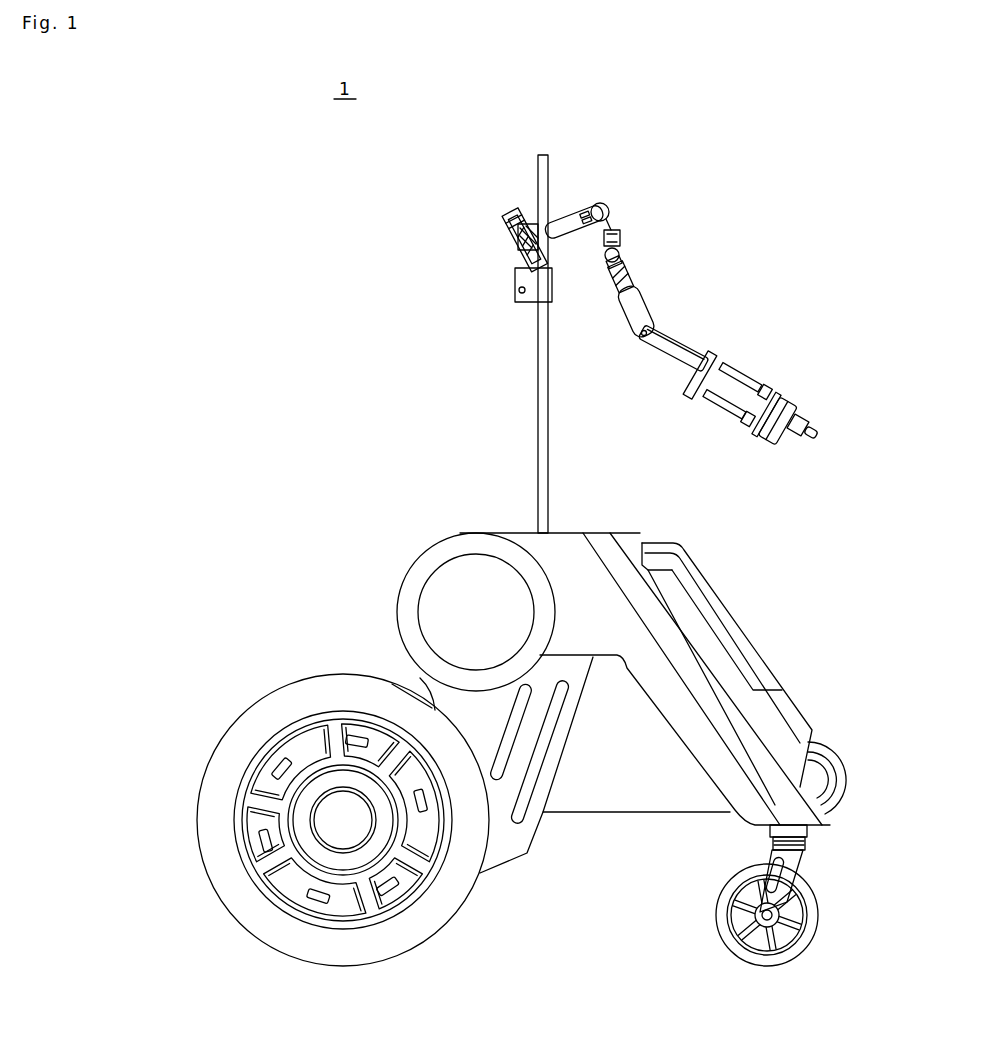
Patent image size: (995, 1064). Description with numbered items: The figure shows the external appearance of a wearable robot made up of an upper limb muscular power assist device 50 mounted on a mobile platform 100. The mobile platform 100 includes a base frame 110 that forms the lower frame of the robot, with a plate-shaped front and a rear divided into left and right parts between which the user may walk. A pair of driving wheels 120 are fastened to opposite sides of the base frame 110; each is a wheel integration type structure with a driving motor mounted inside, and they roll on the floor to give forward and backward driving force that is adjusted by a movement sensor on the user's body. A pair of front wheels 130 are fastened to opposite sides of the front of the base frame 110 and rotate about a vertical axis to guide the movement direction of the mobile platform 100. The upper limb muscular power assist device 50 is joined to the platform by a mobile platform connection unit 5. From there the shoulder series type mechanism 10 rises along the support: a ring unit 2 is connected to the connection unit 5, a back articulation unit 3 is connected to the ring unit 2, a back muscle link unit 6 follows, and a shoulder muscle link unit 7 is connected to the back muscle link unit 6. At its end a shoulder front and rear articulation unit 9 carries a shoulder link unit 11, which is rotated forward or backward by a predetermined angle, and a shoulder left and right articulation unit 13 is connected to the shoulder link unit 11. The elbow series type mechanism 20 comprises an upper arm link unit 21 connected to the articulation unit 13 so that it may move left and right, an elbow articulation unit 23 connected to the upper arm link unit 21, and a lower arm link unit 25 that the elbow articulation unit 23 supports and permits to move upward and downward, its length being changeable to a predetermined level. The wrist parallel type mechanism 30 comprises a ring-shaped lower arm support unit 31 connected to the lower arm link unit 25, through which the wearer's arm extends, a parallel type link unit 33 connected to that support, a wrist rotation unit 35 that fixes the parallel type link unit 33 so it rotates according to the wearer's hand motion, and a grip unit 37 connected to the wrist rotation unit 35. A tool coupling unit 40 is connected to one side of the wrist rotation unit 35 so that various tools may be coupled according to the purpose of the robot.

The ring unit 2 is at (505, 228).
The back articulation unit 3 is at (512, 240).
The mobile platform connection unit 5 is at (505, 255).
The back muscle link unit 6 is at (522, 224).
The shoulder muscle link unit 7 is at (555, 224).
The shoulder front and rear articulation unit 9 is at (610, 210).
The shoulder series type mechanism 10 is at (606, 202).
The shoulder link unit 11 is at (622, 237).
The shoulder left and right articulation unit 13 is at (620, 257).
The elbow series type mechanism 20 is at (684, 327).
The upper arm link unit 21 is at (640, 310).
The elbow articulation unit 23 is at (645, 340).
The lower arm link unit 25 is at (690, 362).
The wrist parallel type mechanism 30 is at (752, 365).
The lower arm support unit 31 is at (691, 400).
The parallel type link unit 33 is at (720, 410).
The wrist rotation unit 35 is at (772, 396).
The grip unit 37 is at (777, 446).
The tool coupling unit 40 is at (816, 440).
The upper limb muscular power assist device 50 is at (386, 328).
The mobile platform 100 is at (176, 731).
The base frame 110 is at (697, 650).
The driving wheels 120 is at (430, 918).
The front wheels 130 is at (820, 915).